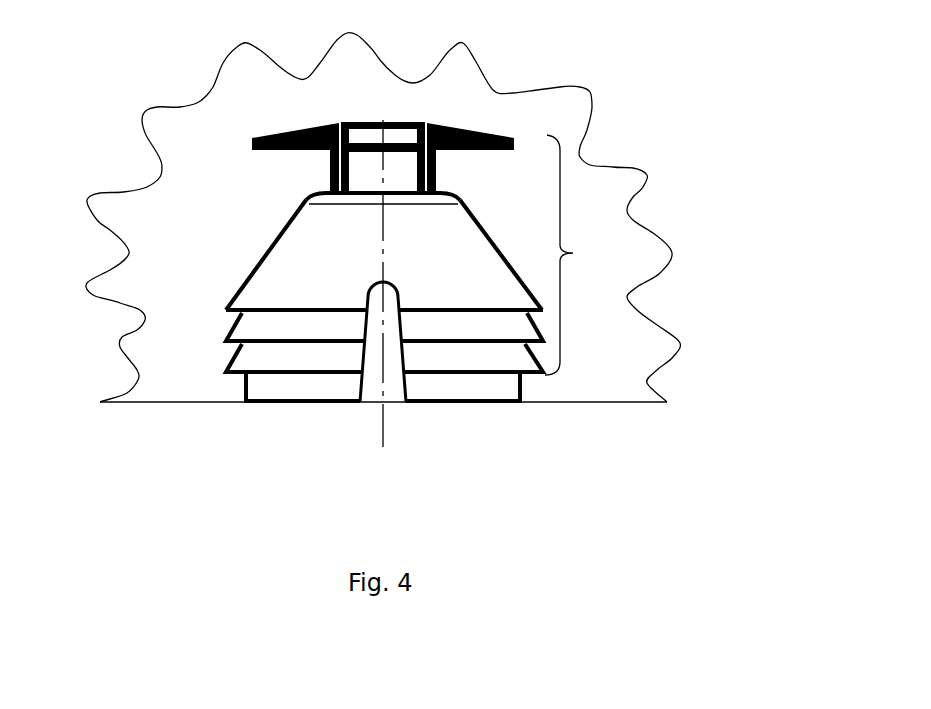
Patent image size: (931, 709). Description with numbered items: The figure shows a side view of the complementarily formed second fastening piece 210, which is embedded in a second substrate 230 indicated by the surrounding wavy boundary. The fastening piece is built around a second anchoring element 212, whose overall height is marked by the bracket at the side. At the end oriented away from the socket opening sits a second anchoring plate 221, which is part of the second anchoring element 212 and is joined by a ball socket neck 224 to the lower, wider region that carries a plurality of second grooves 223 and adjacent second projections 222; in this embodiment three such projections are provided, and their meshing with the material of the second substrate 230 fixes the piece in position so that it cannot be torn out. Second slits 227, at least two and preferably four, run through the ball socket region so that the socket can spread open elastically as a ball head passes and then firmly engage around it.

The second fastening piece 210 is at (353, 264).
The second anchoring element 212 is at (583, 255).
The second anchoring plate 221 is at (253, 139).
The second projections 222 is at (228, 344).
The second grooves 223 is at (241, 316).
The ball socket neck 224 is at (330, 172).
The second slits 227 is at (390, 403).
The second substrate 230 is at (627, 333).